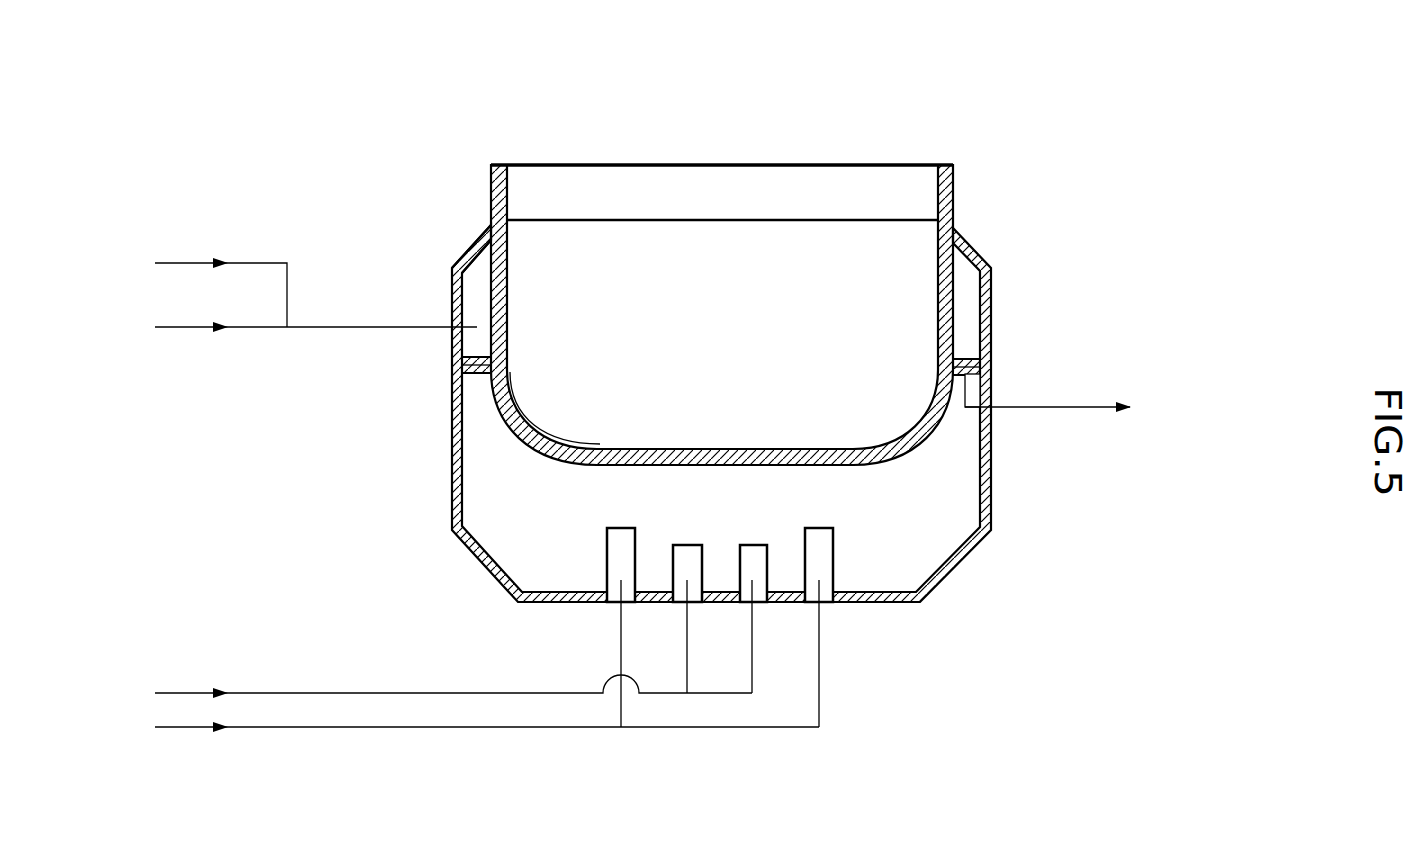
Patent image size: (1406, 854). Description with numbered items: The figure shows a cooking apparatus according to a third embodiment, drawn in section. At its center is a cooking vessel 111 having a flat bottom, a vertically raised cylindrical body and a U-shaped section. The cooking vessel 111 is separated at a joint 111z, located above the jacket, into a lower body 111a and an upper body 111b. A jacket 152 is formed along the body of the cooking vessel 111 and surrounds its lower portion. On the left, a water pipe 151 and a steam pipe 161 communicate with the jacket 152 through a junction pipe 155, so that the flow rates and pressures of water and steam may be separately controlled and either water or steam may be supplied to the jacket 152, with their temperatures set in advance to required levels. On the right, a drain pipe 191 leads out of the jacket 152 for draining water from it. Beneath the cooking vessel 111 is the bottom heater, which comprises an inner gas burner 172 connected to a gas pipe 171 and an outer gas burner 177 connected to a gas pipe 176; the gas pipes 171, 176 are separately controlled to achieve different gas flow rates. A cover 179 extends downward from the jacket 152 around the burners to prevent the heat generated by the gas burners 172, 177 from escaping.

The cooking vessel 111 is at (790, 140).
The lower body 111a is at (500, 296).
The upper body 111b is at (478, 167).
The joint 111z is at (507, 221).
The water pipe 151 is at (185, 263).
The jacket 152 is at (466, 254).
The junction pipe 155 is at (340, 327).
The steam pipe 161 is at (185, 327).
The gas pipe 171 is at (182, 693).
The inner gas burner 172 is at (686, 567).
The gas pipe 176 is at (183, 727).
The outer gas burner 177 is at (622, 542).
The cover 179 is at (992, 462).
The drain pipe 191 is at (1062, 407).